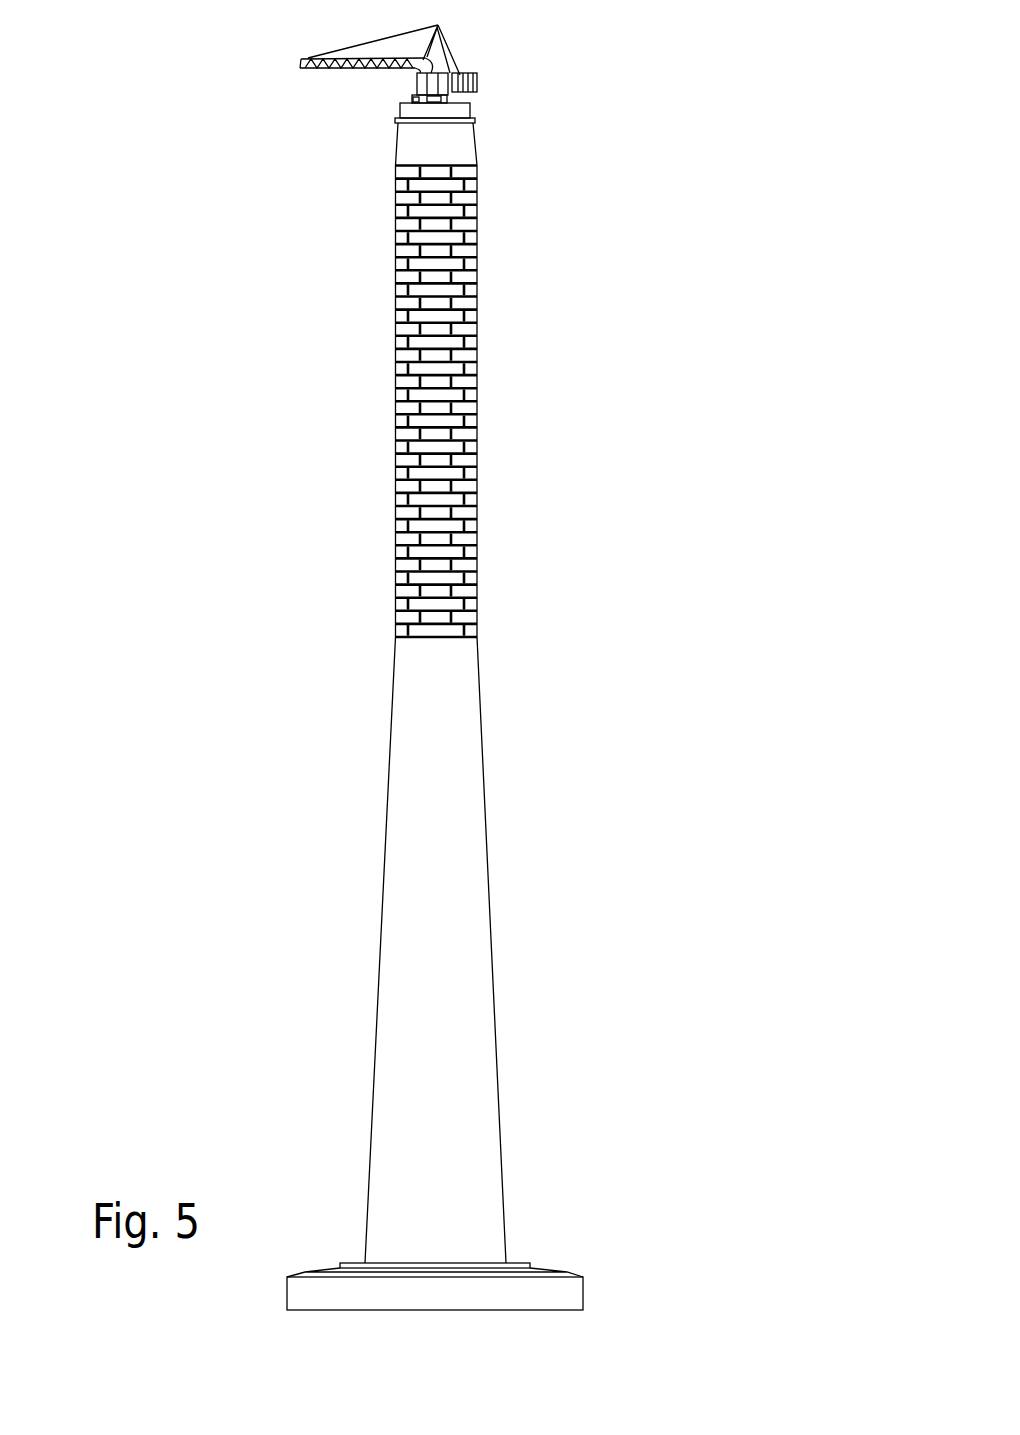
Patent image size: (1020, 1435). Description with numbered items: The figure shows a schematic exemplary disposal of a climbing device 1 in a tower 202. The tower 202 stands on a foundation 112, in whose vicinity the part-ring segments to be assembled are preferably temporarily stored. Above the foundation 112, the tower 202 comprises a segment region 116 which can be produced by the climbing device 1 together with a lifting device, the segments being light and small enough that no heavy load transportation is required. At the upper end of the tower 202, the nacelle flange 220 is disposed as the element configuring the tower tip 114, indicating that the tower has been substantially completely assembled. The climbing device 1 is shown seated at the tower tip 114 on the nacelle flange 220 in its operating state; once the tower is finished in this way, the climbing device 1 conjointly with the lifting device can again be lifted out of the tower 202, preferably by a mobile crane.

The climbing device 1 is at (456, 74).
The tower tip 114 is at (514, 85).
The nacelle flange 220 is at (455, 108).
The tower 202 is at (664, 362).
The segment region 116 is at (489, 425).
The foundation 112 is at (589, 1288).